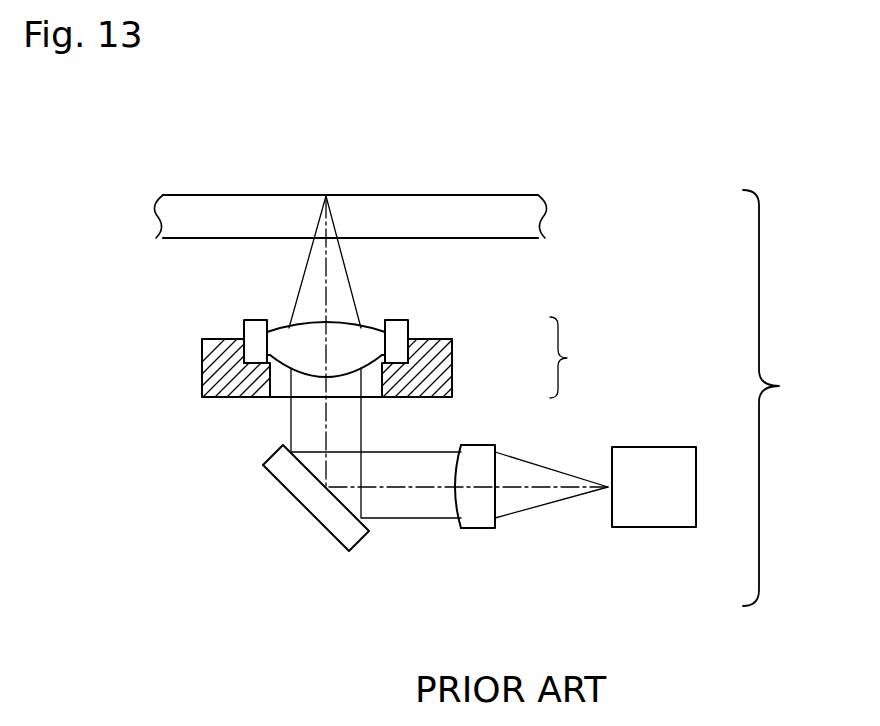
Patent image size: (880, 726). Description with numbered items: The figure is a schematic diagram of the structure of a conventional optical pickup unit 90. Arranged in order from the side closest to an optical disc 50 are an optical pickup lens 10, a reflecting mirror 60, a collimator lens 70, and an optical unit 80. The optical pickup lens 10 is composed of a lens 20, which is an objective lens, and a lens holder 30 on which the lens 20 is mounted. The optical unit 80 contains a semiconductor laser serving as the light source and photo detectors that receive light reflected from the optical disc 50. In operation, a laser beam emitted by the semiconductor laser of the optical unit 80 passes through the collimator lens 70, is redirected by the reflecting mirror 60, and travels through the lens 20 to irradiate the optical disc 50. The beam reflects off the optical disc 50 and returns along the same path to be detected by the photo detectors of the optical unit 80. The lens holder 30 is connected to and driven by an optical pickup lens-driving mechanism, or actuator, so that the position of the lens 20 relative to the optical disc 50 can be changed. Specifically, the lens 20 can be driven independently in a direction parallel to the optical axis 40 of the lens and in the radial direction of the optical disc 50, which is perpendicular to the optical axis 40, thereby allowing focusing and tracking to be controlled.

The optical pickup lens 10 is at (580, 357).
The lens 20 is at (397, 322).
The lens holder 30 is at (452, 370).
The optical axis 40 is at (325, 277).
The optical disc 50 is at (493, 208).
The reflecting mirror 60 is at (339, 525).
The collimator lens 70 is at (477, 519).
The optical unit 80 is at (648, 518).
The optical pickup unit 90 is at (783, 398).